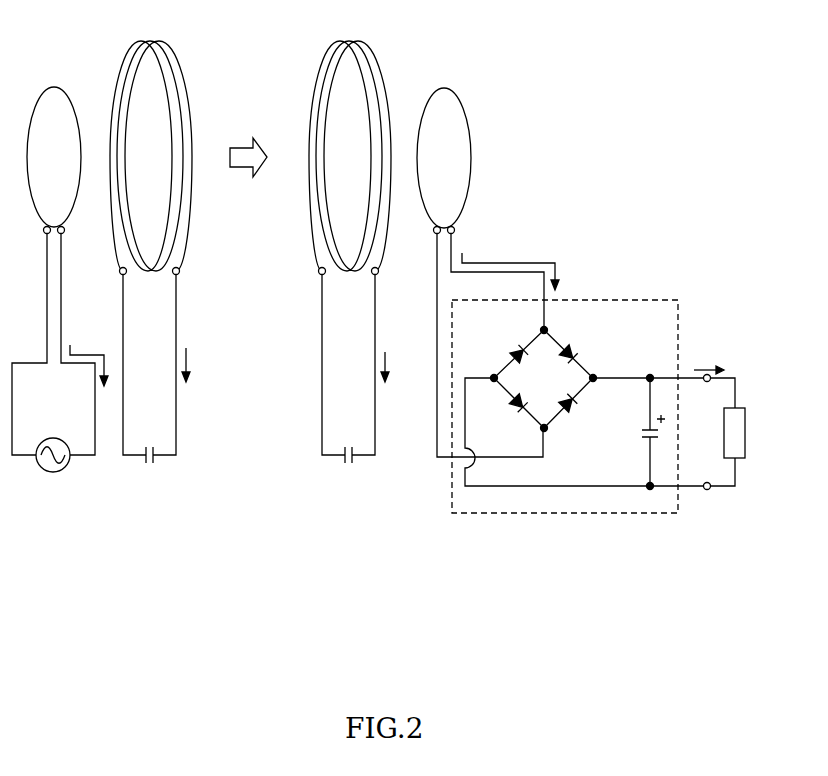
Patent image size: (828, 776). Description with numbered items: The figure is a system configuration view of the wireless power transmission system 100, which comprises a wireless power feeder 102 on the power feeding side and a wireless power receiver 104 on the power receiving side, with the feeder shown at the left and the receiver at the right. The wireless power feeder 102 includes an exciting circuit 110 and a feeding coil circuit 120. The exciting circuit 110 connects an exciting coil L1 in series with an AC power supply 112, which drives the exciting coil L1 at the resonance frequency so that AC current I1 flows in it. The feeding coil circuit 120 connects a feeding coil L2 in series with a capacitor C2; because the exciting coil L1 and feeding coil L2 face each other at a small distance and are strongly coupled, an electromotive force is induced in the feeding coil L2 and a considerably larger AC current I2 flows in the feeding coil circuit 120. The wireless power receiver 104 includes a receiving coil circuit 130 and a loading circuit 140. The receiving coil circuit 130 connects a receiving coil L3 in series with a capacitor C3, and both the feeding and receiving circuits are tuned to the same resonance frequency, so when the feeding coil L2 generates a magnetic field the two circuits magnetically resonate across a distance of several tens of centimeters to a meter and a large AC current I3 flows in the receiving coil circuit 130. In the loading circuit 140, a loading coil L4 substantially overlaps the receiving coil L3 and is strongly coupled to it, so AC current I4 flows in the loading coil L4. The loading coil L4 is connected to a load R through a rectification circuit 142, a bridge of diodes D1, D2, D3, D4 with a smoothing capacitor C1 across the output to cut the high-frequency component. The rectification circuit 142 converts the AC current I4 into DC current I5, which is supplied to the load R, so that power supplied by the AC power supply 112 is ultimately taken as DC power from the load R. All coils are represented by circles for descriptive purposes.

The wireless power transmission system 100 is at (380, 348).
The wireless power feeder 102 is at (104, 318).
The wireless power receiver 104 is at (529, 318).
The exciting circuit 110 is at (55, 297).
The AC power supply 112 is at (55, 438).
The feeding coil circuit 120 is at (157, 276).
The receiving coil circuit 130 is at (353, 276).
The loading circuit 140 is at (587, 318).
The rectification circuit 142 is at (578, 386).
The exciting coil L1 is at (54, 148).
The feeding coil L2 is at (151, 147).
The receiving coil L3 is at (350, 147).
The loading coil L4 is at (444, 149).
The capacitor C1 is at (641, 432).
The capacitor C2 is at (149, 382).
The capacitor C3 is at (348, 382).
The diode D1 is at (510, 344).
The diode D2 is at (578, 344).
The diode D3 is at (510, 413).
The diode D4 is at (579, 413).
The load R is at (725, 432).
The AC current I1 is at (89, 359).
The AC current I2 is at (193, 365).
The AC current I3 is at (392, 367).
The AC current I4 is at (510, 267).
The DC current I5 is at (709, 361).